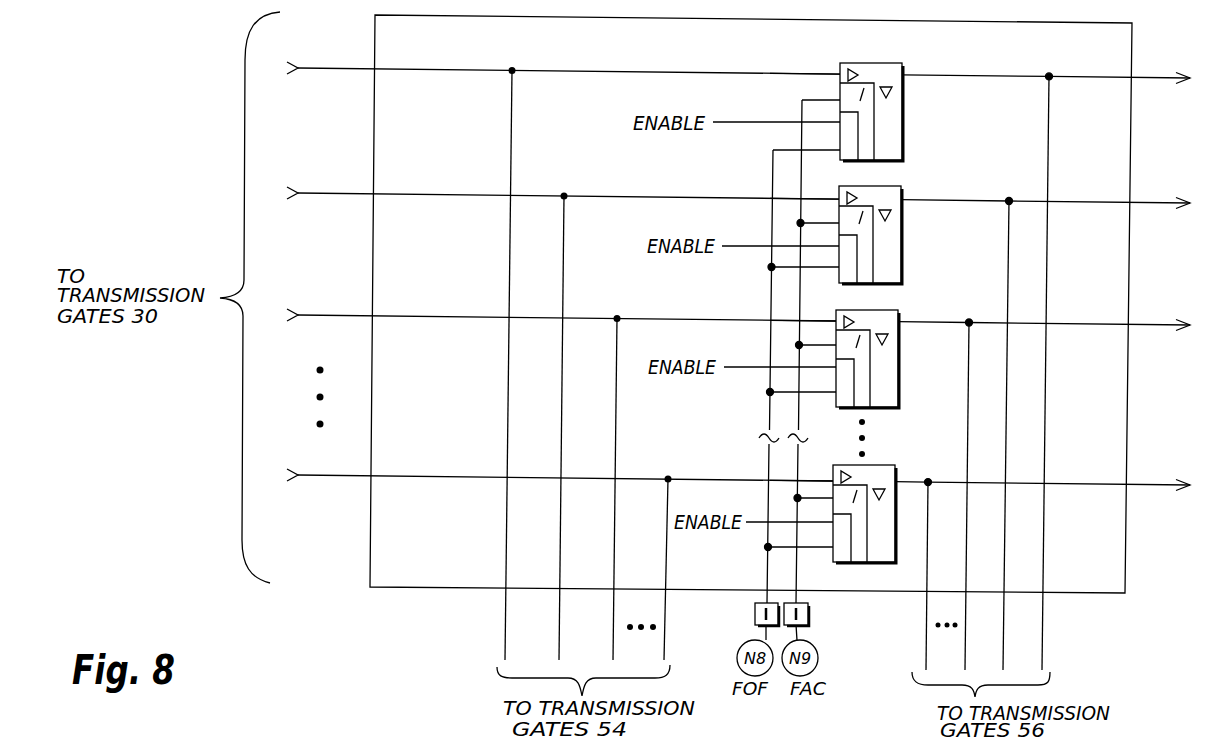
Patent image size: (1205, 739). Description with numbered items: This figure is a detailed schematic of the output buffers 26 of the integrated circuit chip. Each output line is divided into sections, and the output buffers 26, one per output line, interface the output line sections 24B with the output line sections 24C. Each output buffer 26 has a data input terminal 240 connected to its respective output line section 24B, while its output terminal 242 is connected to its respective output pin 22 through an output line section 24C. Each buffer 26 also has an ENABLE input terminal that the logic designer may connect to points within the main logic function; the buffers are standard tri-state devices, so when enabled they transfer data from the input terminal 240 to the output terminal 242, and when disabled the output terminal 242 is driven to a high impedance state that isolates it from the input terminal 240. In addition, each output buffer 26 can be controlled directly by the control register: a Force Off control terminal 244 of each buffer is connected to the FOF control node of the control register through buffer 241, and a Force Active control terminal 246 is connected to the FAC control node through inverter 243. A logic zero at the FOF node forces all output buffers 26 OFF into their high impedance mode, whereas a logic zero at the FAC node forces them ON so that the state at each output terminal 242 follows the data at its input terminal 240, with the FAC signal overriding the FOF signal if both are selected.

The output pin 22 is at (1158, 76).
The output line section 24B is at (442, 70).
The output line section 24C is at (1078, 77).
The output buffer 26 is at (903, 139).
The data input terminal 240 is at (834, 73).
The buffer 241 is at (755, 616).
The output terminal 242 is at (914, 77).
The inverter 243 is at (811, 619).
The Force Off (FOF) control terminal 244 is at (823, 150).
The Force Active (FAC) control terminal 246 is at (836, 98).